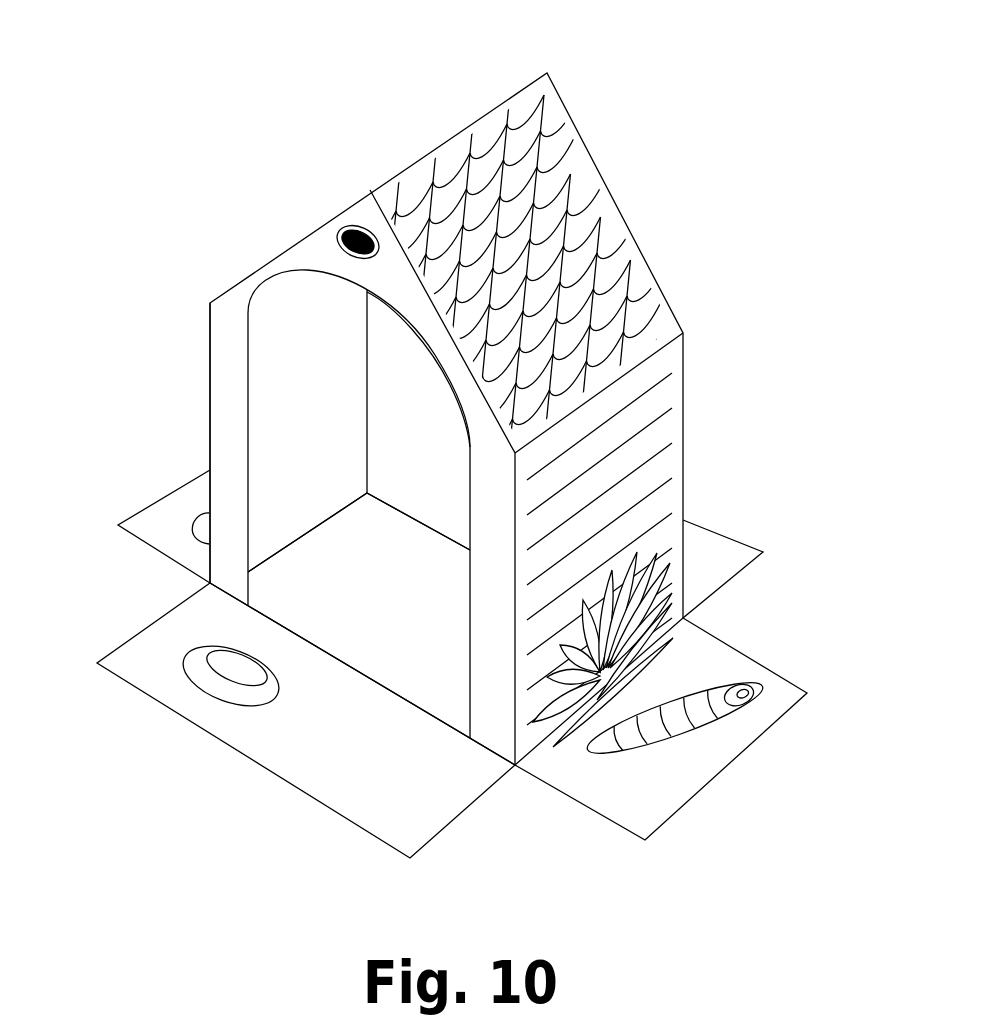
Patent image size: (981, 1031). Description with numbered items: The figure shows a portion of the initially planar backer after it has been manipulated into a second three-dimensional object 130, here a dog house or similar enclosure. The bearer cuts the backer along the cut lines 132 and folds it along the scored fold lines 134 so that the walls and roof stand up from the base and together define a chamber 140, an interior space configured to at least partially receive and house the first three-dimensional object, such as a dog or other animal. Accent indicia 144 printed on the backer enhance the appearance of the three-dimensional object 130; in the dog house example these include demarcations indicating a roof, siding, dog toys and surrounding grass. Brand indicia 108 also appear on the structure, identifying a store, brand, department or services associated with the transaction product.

The second three-dimensional object 130 is at (213, 113).
The brand indicia 108 is at (357, 225).
The accent indicia 144 is at (627, 270).
The fold lines 134 is at (210, 371).
The chamber 140 is at (337, 577).
The cut lines 132 is at (742, 652).